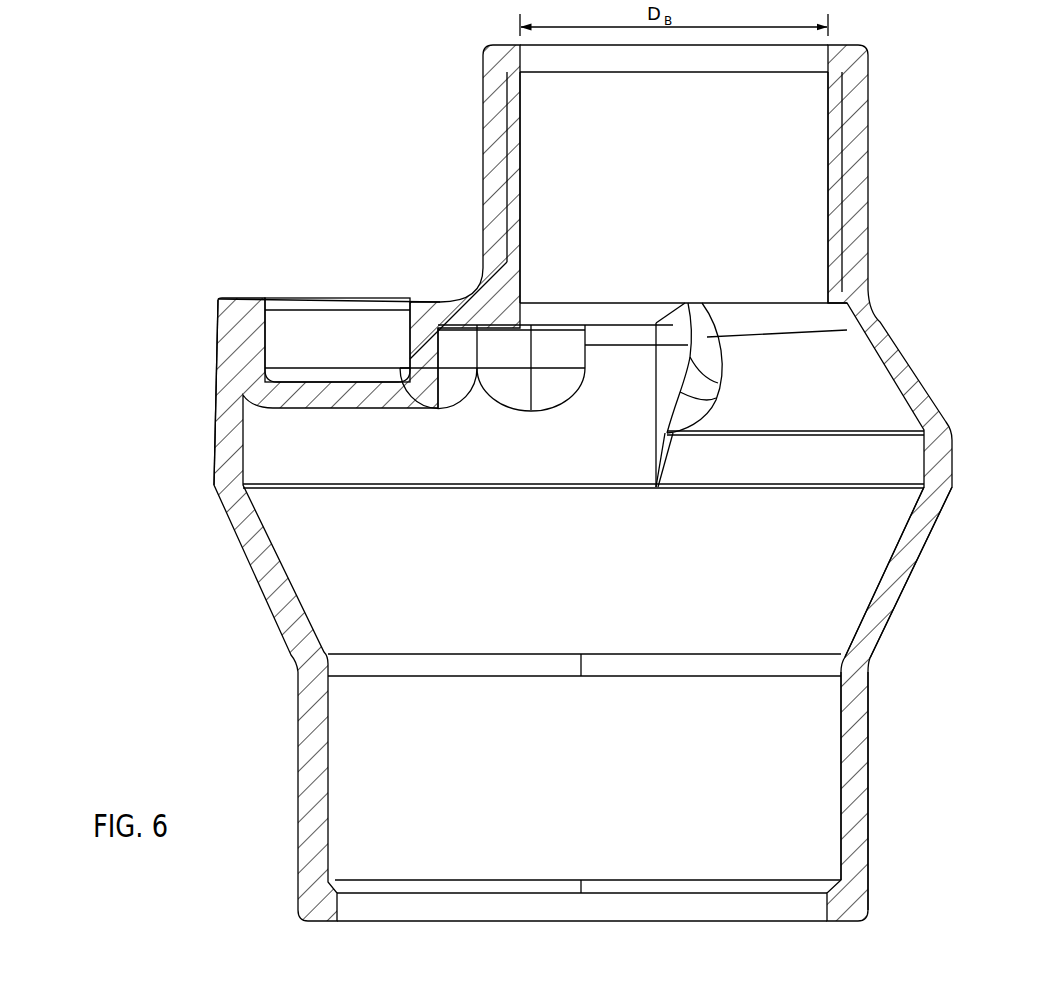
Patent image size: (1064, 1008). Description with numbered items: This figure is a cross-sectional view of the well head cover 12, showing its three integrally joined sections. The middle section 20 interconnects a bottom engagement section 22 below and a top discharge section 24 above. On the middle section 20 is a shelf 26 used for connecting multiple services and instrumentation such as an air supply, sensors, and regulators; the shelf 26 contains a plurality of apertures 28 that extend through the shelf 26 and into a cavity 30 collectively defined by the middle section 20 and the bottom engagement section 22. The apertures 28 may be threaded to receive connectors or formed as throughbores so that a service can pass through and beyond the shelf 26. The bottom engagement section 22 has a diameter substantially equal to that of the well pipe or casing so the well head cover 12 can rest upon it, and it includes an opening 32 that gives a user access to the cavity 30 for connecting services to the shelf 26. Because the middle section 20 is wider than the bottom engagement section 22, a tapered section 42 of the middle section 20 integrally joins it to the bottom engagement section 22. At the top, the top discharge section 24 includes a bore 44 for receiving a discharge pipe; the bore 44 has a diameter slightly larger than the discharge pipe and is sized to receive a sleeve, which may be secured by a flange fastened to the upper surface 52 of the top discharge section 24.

The well head cover 12 is at (947, 97).
The middle section 20 is at (947, 407).
The bottom engagement section 22 is at (871, 795).
The top discharge section 24 is at (870, 203).
The shelf 26 is at (234, 297).
The apertures 28 is at (268, 300).
The cavity 30 is at (771, 533).
The opening 32 is at (829, 912).
The tapered section 42 is at (913, 577).
The bore 44 is at (533, 97).
The upper surface 52 is at (857, 42).